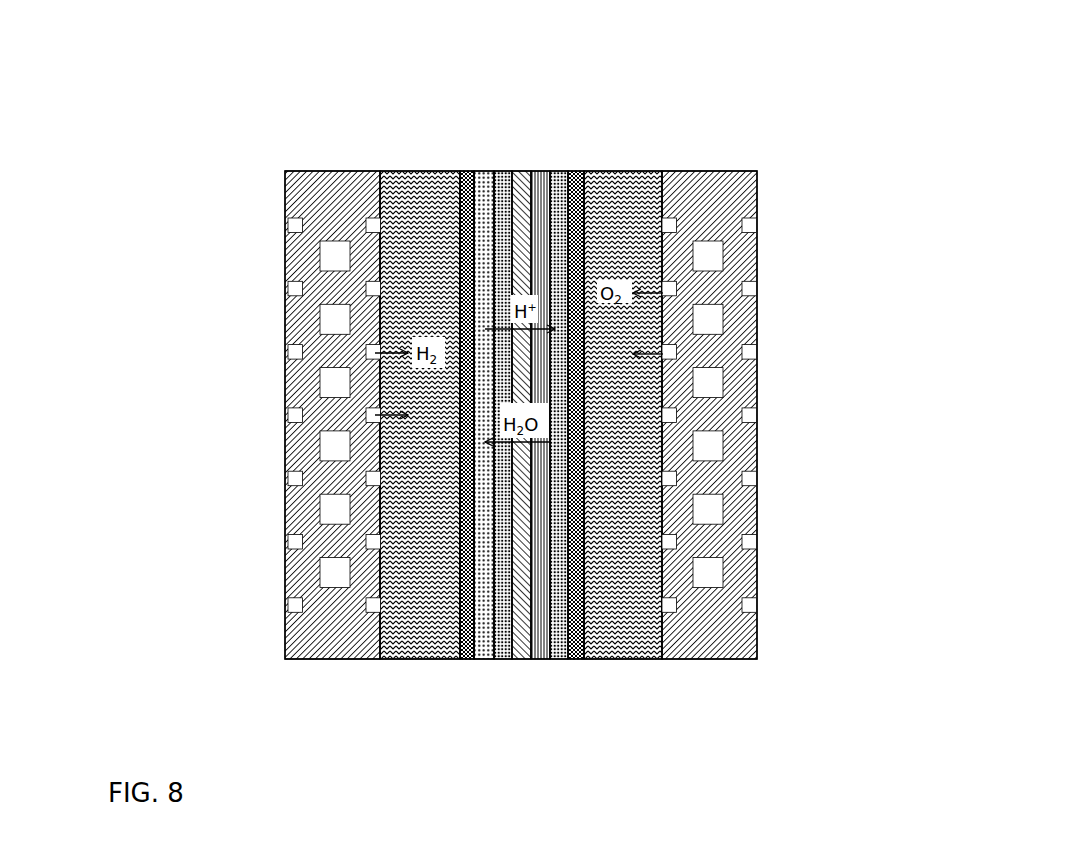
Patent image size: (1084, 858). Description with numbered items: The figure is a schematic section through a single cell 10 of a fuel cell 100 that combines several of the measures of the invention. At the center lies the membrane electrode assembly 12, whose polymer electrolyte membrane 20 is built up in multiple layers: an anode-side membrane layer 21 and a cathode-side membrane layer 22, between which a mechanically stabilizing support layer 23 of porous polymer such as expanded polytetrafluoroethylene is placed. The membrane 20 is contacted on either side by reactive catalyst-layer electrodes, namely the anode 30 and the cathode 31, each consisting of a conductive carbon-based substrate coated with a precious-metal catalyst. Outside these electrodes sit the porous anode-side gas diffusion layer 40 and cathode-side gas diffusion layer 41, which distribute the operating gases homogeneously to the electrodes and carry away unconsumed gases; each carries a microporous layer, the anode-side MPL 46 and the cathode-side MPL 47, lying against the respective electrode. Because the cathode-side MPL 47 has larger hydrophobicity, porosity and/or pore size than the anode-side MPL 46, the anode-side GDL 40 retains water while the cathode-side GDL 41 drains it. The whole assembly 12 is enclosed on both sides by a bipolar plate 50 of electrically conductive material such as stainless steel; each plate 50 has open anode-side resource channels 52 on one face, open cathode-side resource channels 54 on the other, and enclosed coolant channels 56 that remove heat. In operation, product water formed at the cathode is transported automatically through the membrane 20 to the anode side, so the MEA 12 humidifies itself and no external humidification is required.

The fuel cell 100 is at (790, 85).
The single cell 10 is at (708, 86).
The membrane electrode assembly 12 is at (382, 130).
The polymer electrolyte membrane 20 is at (493, 170).
The anode-side membrane layer 21 is at (507, 649).
The cathode-side membrane layer 22 is at (540, 651).
The support layer 23 is at (523, 650).
The anode 30 is at (483, 639).
The cathode 31 is at (560, 645).
The anode-side gas diffusion layer 40 is at (395, 637).
The cathode-side gas diffusion layer 41 is at (637, 635).
The anode-side microporous layer 46 is at (467, 637).
The cathode-side microporous layer 47 is at (575, 640).
The bipolar plate 50 is at (321, 634).
The anode-side resource channels 52 is at (749, 226).
The cathode-side resource channels 54 is at (668, 540).
The coolant channels 56 is at (713, 393).